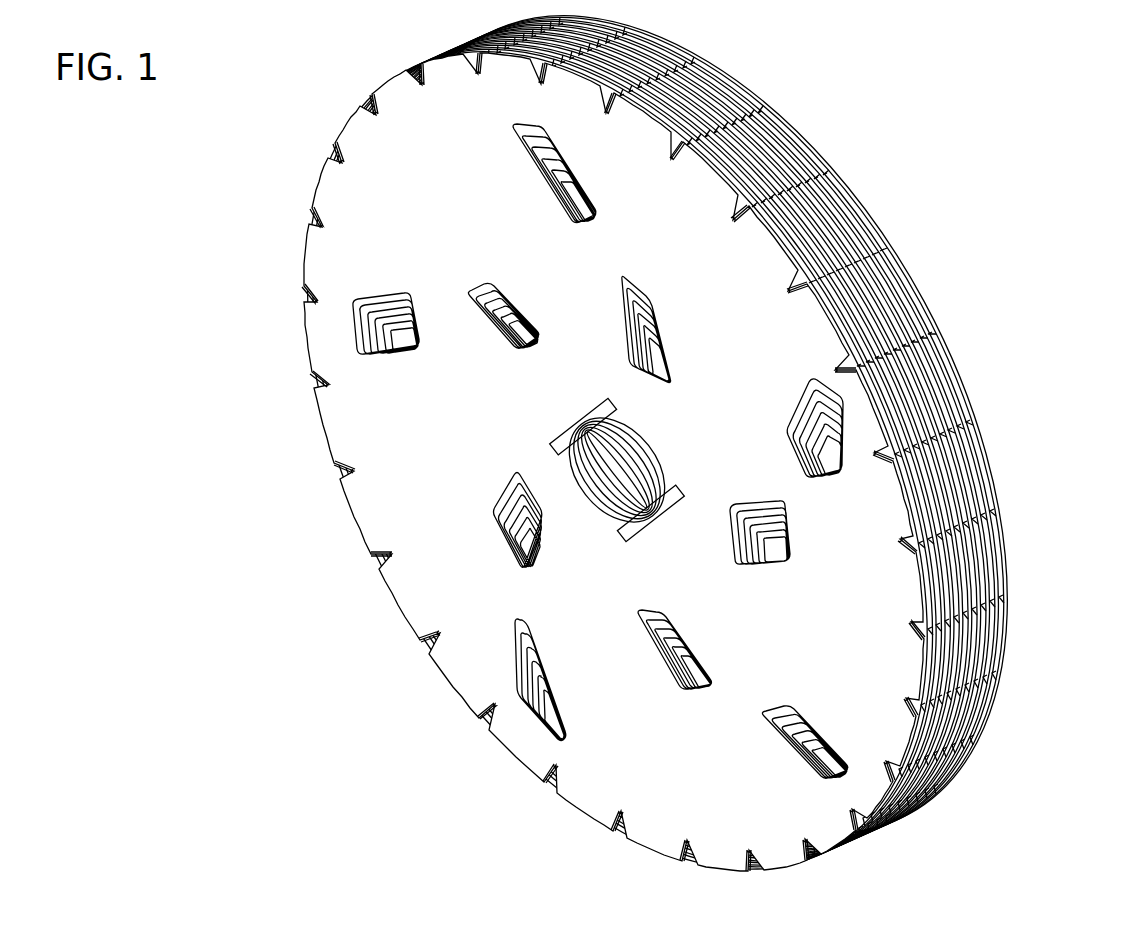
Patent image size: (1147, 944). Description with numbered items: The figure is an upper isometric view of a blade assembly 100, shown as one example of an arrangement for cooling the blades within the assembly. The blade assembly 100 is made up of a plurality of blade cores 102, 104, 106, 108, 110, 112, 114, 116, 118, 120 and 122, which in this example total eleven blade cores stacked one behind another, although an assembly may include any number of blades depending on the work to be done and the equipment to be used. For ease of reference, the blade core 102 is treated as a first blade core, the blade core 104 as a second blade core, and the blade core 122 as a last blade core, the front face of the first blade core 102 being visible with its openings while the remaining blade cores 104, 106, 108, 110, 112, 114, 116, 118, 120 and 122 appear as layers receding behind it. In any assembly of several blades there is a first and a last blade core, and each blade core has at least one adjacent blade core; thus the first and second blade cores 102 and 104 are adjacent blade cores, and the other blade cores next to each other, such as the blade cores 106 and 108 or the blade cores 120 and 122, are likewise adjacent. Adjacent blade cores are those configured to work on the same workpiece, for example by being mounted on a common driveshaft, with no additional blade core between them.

The blade assembly 100 is at (318, 112).
The blade core 102 is at (347, 192).
The blade core 104 is at (813, 300).
The blade core 106 is at (852, 337).
The blade core 108 is at (892, 372).
The blade core 110 is at (917, 407).
The blade core 112 is at (940, 447).
The blade core 114 is at (960, 493).
The blade core 116 is at (977, 540).
The blade core 118 is at (997, 567).
The blade core 120 is at (1000, 603).
The blade core 122 is at (1007, 652).